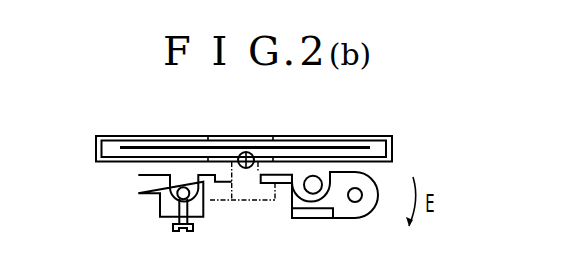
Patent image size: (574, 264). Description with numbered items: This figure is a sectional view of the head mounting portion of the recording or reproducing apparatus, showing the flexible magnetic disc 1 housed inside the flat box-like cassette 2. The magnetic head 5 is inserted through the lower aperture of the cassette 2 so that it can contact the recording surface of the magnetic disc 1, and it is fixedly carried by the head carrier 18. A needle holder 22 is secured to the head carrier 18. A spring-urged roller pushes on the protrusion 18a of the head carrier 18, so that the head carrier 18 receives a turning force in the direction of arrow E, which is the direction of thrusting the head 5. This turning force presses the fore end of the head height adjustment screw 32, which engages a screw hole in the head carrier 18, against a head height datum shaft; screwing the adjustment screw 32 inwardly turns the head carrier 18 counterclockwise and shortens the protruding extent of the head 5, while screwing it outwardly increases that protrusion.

The magnetic disc 1 is at (316, 150).
The cassette 2 is at (353, 138).
The magnetic head 5 is at (246, 168).
The head carrier 18 is at (363, 210).
The protrusion 18a is at (145, 190).
The needle holder 22 is at (302, 214).
The head height adjustment screw 32 is at (172, 226).